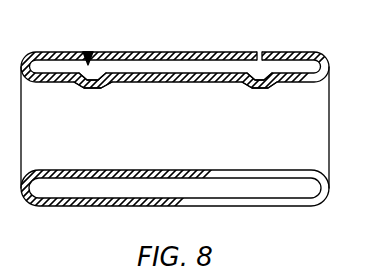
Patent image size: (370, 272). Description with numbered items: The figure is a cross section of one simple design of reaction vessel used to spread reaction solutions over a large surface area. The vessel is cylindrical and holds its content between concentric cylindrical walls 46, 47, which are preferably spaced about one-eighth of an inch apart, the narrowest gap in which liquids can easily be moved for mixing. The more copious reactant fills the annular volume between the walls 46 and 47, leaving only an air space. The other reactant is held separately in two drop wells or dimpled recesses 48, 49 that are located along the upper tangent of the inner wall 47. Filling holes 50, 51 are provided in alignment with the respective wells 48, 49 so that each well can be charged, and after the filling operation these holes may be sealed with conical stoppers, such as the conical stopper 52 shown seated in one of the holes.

The wall 46 is at (199, 169).
The wall 47 is at (178, 52).
The drop well 48 is at (91, 96).
The drop well 49 is at (266, 94).
The filling hole 50 is at (258, 51).
The filling hole 51 is at (84, 51).
The conical stopper 52 is at (92, 50).